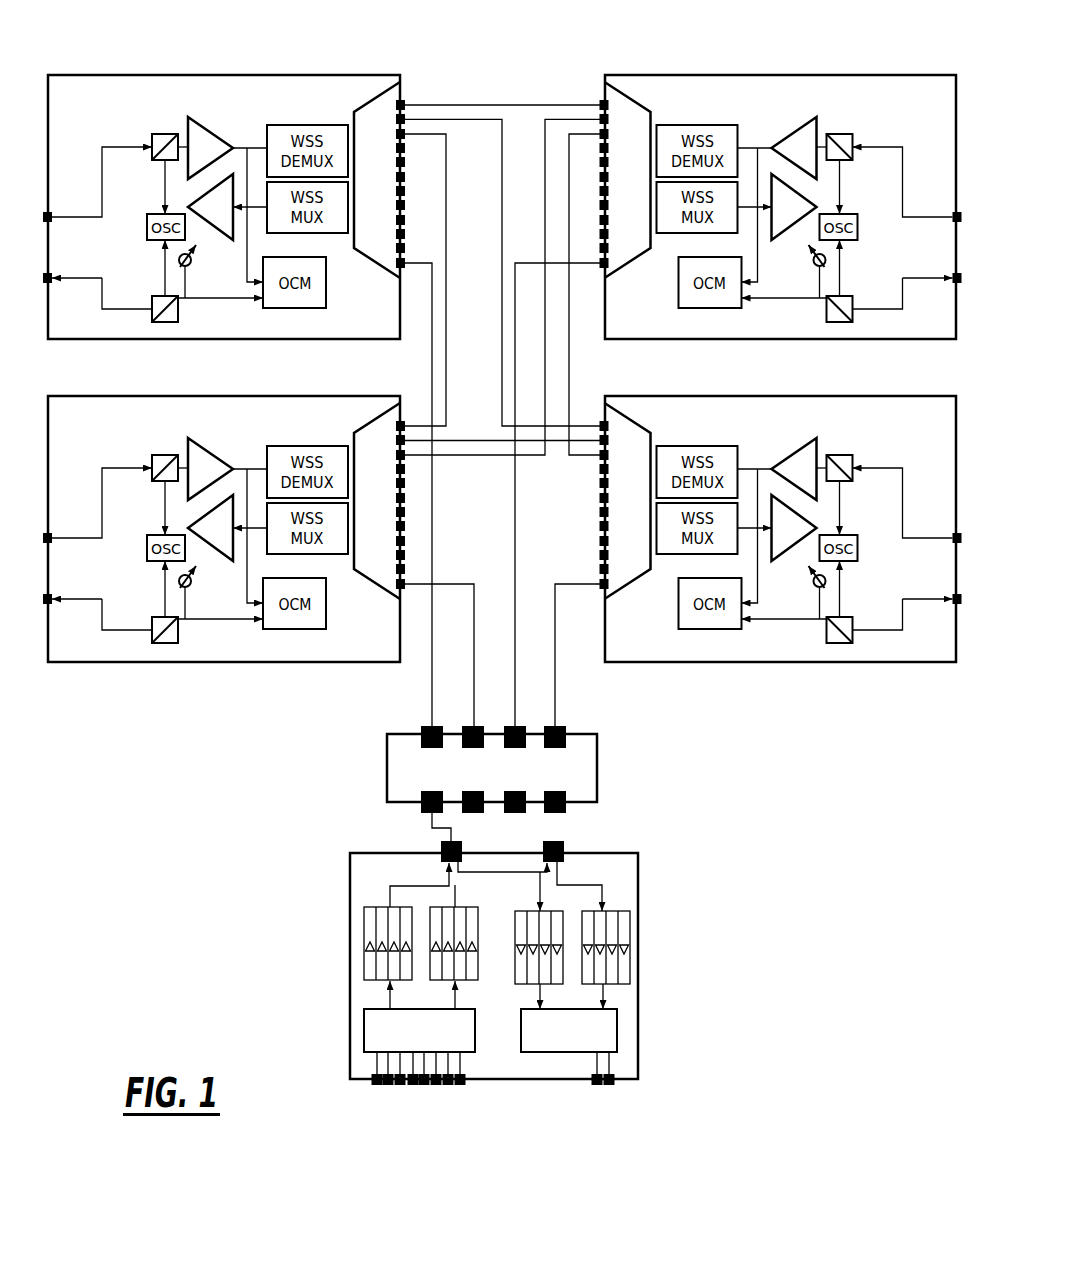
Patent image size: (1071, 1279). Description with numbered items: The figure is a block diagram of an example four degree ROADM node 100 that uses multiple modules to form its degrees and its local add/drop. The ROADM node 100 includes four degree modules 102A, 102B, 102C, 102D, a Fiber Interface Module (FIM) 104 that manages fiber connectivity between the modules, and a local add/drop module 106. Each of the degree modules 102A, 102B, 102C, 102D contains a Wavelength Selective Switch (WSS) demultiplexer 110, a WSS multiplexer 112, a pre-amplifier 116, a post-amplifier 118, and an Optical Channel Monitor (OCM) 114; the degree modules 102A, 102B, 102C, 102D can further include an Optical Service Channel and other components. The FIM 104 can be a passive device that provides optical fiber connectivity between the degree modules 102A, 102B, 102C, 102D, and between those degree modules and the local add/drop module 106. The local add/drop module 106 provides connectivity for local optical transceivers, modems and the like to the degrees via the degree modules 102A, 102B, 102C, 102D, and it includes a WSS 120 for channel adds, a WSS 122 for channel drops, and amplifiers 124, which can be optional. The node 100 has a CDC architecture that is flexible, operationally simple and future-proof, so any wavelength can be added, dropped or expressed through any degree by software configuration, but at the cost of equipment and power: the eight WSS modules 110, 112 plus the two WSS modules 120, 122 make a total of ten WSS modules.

The four degree ROADM node 100 is at (533, 23).
The degree module 102A is at (224, 208).
The degree module 102B is at (72, 397).
The degree module 102C is at (885, 75).
The degree module 102D is at (885, 396).
The Fiber Interface Module (FIM) 104 is at (597, 763).
The local add/drop module 106 is at (487, 971).
The Wavelength Selective Switch (WSS) demultiplexer 110 is at (287, 124).
The WSS multiplexer 112 is at (333, 233).
The Optical Channel Monitor (OCM) 114 is at (292, 308).
The pre-amplifier 116 is at (203, 124).
The post-amplifier 118 is at (230, 238).
The WSS for channel adds 120 is at (618, 1023).
The WSS for channel drops 122 is at (364, 1030).
The amplifiers 124 is at (364, 958).